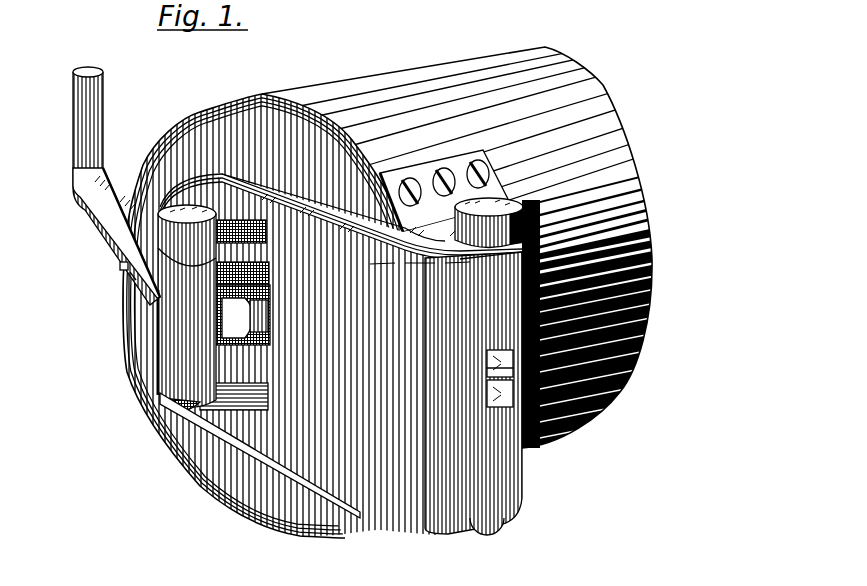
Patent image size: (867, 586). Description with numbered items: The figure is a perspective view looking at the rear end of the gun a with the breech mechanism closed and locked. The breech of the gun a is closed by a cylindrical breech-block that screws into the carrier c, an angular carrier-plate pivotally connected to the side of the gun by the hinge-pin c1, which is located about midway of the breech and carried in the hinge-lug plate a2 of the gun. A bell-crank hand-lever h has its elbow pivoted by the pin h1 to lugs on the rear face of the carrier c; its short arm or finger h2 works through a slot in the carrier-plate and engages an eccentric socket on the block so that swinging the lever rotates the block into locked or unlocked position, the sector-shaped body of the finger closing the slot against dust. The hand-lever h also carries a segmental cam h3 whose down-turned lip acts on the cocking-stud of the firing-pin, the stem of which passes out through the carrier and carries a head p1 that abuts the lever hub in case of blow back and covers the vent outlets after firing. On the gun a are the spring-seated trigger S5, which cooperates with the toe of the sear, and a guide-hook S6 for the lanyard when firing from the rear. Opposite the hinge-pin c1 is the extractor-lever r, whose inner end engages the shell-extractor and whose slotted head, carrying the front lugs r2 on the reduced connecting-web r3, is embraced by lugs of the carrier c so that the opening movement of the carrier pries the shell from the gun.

The gun a is at (177, 142).
The hinge-lug plate a2 is at (420, 173).
The carrier c is at (349, 377).
The hinge-pin c1 is at (520, 201).
The bell-crank hand-lever h is at (101, 186).
The pin h1 is at (147, 197).
The short arm or finger h2 is at (258, 265).
The segmental cam h3 is at (222, 323).
The head p1 is at (255, 337).
The spring-seated trigger S5 is at (133, 277).
The guide-hook S6 is at (120, 265).
The extractor-lever r is at (487, 368).
The front pair of shoulders or lugs r2 is at (510, 350).
The reduced connecting-web r3 is at (490, 388).